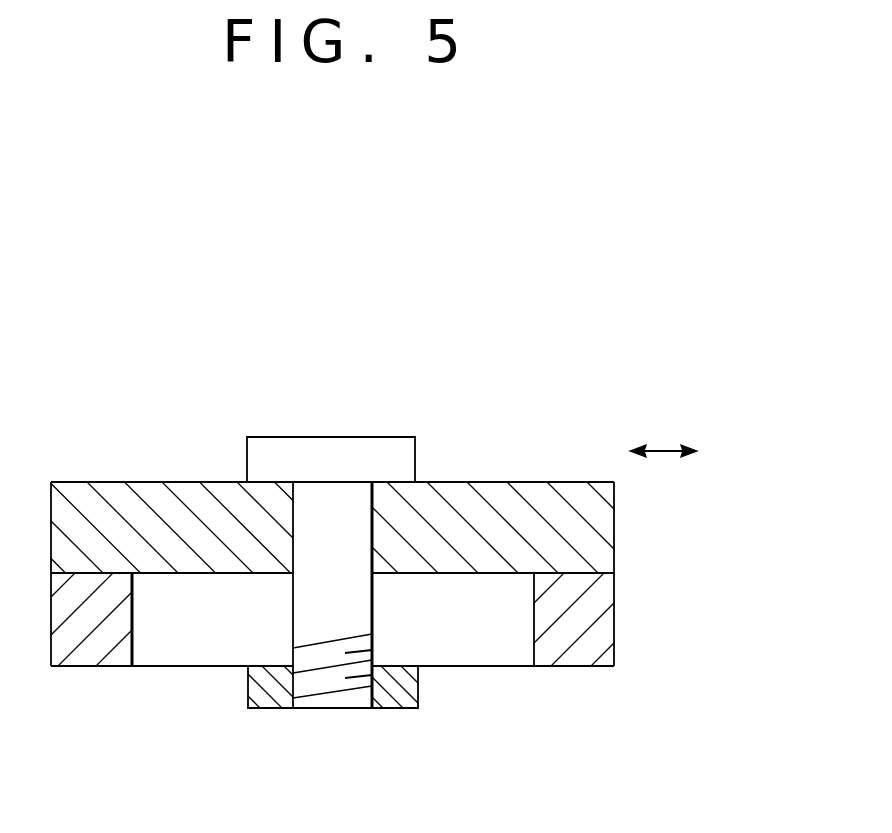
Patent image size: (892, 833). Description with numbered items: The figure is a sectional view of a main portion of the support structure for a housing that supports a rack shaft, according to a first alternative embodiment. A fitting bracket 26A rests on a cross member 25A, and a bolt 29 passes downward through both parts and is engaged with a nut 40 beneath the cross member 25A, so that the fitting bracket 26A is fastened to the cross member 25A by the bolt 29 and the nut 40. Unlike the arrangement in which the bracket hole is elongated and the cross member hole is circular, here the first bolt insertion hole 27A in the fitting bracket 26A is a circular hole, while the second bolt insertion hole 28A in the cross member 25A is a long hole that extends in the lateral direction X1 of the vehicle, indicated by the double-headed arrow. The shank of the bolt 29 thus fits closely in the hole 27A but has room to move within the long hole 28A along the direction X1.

The fitting bracket 26A is at (87, 482).
The cross member 25A is at (593, 666).
The first bolt insertion hole 27A is at (372, 522).
The second bolt insertion hole 28A is at (134, 618).
The bolt 29 is at (347, 448).
The nut 40 is at (419, 693).
The lateral direction of the vehicle X1 is at (665, 450).